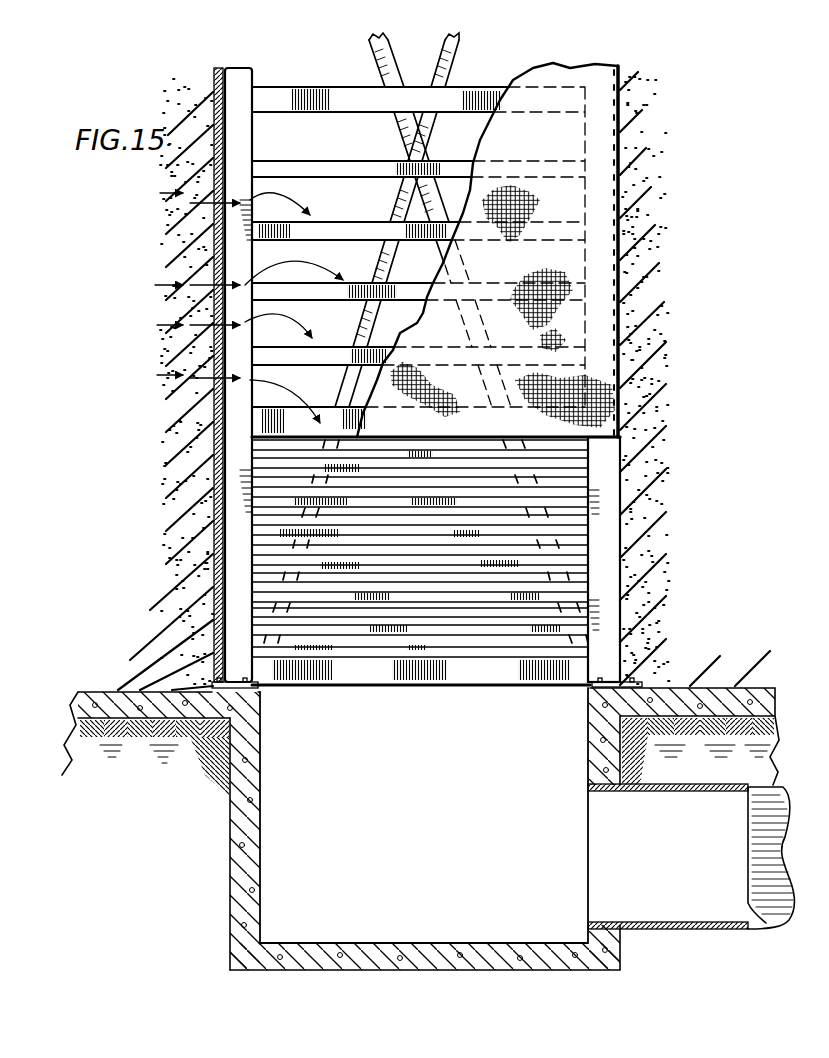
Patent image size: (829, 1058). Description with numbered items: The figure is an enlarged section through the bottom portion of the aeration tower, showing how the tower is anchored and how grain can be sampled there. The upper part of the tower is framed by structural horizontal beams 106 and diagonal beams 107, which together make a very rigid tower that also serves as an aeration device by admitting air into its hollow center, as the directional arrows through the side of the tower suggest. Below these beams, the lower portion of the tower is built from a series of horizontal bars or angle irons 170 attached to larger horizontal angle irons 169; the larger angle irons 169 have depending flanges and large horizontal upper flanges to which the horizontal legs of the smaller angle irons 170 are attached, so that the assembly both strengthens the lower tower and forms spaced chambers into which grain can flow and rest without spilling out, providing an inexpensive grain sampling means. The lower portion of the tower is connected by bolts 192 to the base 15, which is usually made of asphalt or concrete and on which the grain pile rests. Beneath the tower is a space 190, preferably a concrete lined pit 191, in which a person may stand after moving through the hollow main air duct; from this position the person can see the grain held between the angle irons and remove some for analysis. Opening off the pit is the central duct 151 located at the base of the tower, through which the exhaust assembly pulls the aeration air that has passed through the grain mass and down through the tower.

The horizontal beams 106 is at (297, 173).
The diagonal beams 107 is at (405, 193).
The horizontal angle iron 169 is at (587, 455).
The horizontal bars or angle irons 170 is at (577, 487).
The space 190 is at (425, 862).
The concrete lined pit 191 is at (230, 852).
The bolts 192 is at (636, 678).
The base 15 is at (97, 690).
The central duct 151 is at (703, 867).